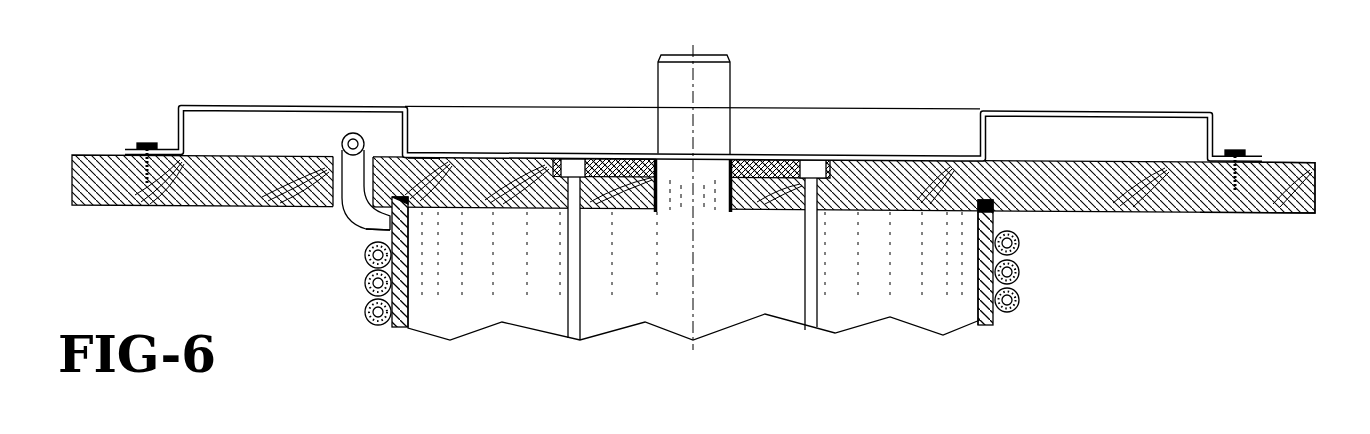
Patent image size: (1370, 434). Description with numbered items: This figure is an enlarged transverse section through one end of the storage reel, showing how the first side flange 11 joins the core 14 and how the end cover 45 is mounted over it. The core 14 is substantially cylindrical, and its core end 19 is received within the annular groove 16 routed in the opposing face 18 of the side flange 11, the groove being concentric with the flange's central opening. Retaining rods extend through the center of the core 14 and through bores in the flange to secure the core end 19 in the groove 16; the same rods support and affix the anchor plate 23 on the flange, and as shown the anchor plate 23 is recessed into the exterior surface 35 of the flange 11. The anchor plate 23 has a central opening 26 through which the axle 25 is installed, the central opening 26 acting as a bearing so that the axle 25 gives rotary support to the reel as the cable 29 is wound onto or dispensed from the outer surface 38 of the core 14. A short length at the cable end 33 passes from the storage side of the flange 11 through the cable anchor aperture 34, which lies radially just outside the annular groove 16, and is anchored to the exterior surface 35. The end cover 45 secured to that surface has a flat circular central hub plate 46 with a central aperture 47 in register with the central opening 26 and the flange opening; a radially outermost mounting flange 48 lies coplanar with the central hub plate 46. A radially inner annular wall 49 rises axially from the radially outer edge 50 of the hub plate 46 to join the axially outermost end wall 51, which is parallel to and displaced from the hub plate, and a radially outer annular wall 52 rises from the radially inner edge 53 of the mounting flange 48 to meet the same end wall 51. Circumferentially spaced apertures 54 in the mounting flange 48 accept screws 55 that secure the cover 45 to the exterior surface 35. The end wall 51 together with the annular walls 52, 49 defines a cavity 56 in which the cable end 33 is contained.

The first side flange 11 is at (1311, 214).
The core 14 is at (991, 336).
The annular groove 16 is at (996, 222).
The opposing face 18 is at (1165, 183).
The core end 19 is at (988, 206).
The anchor plate 23 is at (779, 165).
The axle 25 is at (708, 70).
The central opening 26 is at (722, 159).
The cable 29 is at (1014, 307).
The cable end 33 is at (354, 132).
The cable anchor aperture 34 is at (340, 220).
The exterior surface 35 is at (1288, 159).
The outer surface 38 is at (384, 329).
The end cover 45 is at (1093, 90).
The central hub plate 46 is at (512, 152).
The central aperture 47 is at (650, 150).
The mounting flange 48 is at (136, 148).
The radially inner annular wall 49 is at (408, 123).
The radially outer edge 50 is at (409, 149).
The axially outermost end wall 51 is at (240, 104).
The radially outer annular wall 52 is at (184, 132).
The radially inner edge 53 is at (180, 158).
The aperture 54 is at (1231, 176).
The screw 55 is at (1240, 154).
The cavity 56 is at (302, 122).